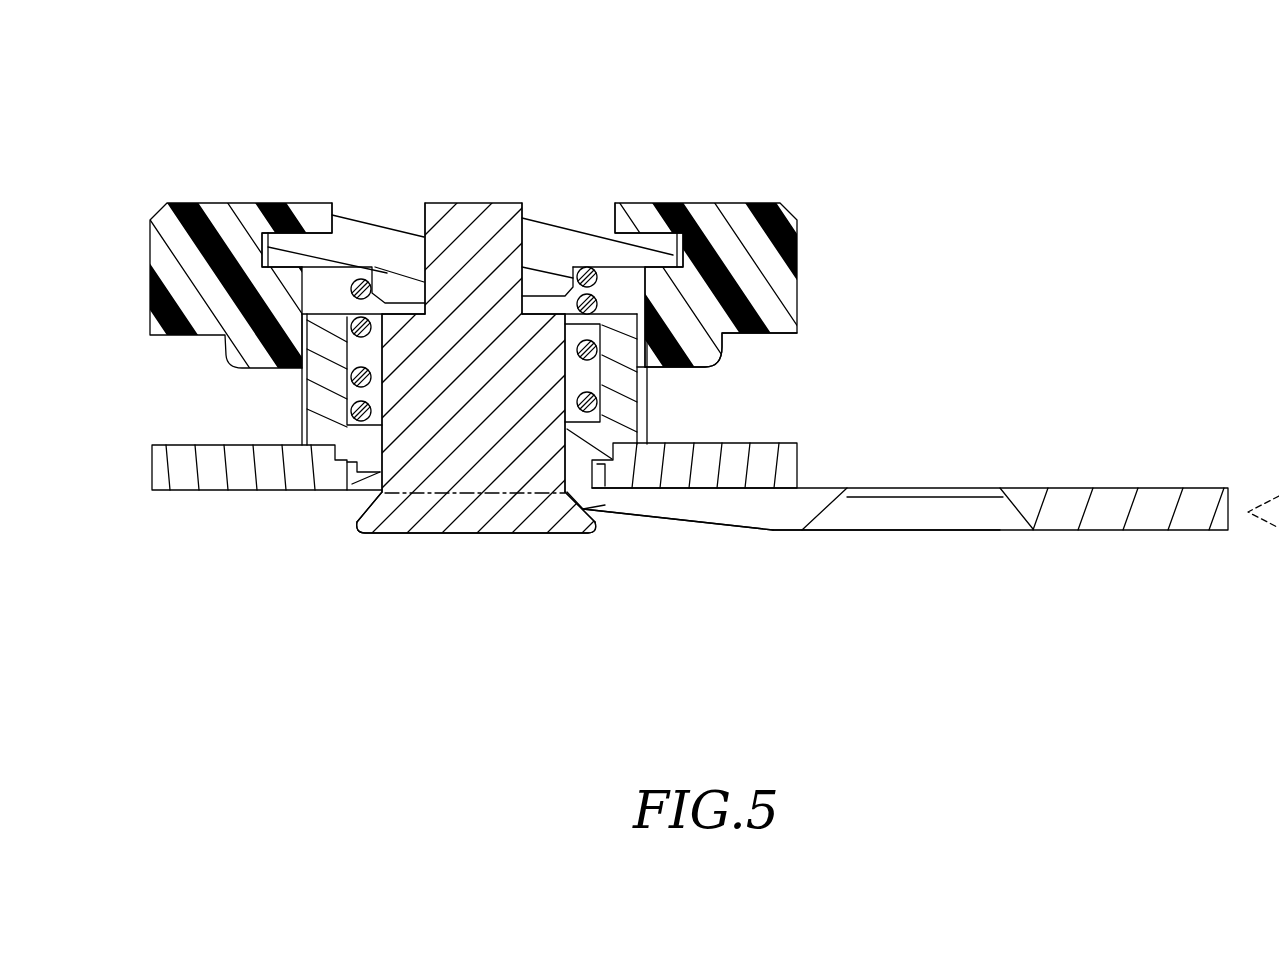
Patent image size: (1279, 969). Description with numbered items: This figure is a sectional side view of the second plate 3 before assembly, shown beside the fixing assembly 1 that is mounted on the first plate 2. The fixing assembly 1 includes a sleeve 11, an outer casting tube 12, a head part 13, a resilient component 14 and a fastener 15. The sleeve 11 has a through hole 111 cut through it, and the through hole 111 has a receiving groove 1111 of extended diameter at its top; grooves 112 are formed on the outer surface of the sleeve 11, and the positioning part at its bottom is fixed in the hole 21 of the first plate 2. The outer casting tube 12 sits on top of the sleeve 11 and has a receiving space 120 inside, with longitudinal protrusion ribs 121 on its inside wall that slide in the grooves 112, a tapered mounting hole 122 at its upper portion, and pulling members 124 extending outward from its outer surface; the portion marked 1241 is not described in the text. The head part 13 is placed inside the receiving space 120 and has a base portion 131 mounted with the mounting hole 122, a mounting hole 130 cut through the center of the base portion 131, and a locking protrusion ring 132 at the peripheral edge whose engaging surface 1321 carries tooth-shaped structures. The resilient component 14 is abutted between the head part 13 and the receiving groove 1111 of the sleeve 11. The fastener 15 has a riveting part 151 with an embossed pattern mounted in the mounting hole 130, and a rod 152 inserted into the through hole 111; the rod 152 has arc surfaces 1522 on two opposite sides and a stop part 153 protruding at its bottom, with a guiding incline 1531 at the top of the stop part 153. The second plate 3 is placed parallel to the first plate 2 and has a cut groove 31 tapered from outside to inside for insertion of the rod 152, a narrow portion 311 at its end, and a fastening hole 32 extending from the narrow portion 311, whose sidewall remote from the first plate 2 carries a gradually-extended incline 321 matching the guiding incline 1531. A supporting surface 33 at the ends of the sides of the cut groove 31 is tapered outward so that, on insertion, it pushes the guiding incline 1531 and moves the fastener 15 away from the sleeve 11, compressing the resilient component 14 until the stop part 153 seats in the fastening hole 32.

The fixing assembly 1 is at (818, 261).
The sleeve 11 is at (303, 432).
The through hole 111 is at (338, 407).
The receiving groove 1111 is at (373, 317).
The grooves 112 is at (650, 417).
The outer casting tube 12 is at (742, 240).
The receiving space 120 is at (630, 280).
The longitudinal protrusion ribs 121 is at (650, 283).
The mounting hole 122 is at (613, 217).
The pulling members 124 is at (928, 318).
The notch 1241 is at (785, 302).
The head part 13 is at (368, 125).
The mounting hole 130 is at (420, 262).
The base portion 131 is at (376, 213).
The locking protrusion ring 132 is at (325, 245).
The engaging surface 1321 is at (262, 252).
The resilient component 14 is at (588, 351).
The fastener 15 is at (508, 125).
The riveting part 151 is at (520, 235).
The rod 152 is at (402, 610).
The arc surfaces 1522 is at (430, 515).
The stop part 153 is at (512, 523).
The guiding incline 1531 is at (590, 507).
The first plate 2 is at (785, 468).
The hole 21 is at (342, 464).
The second plate 3 is at (1193, 500).
The cut groove 31 is at (775, 518).
The narrow portion 311 is at (830, 512).
The fastening hole 32 is at (1000, 490).
The gradually-extended incline 321 is at (997, 520).
The supporting surface 33 is at (715, 525).